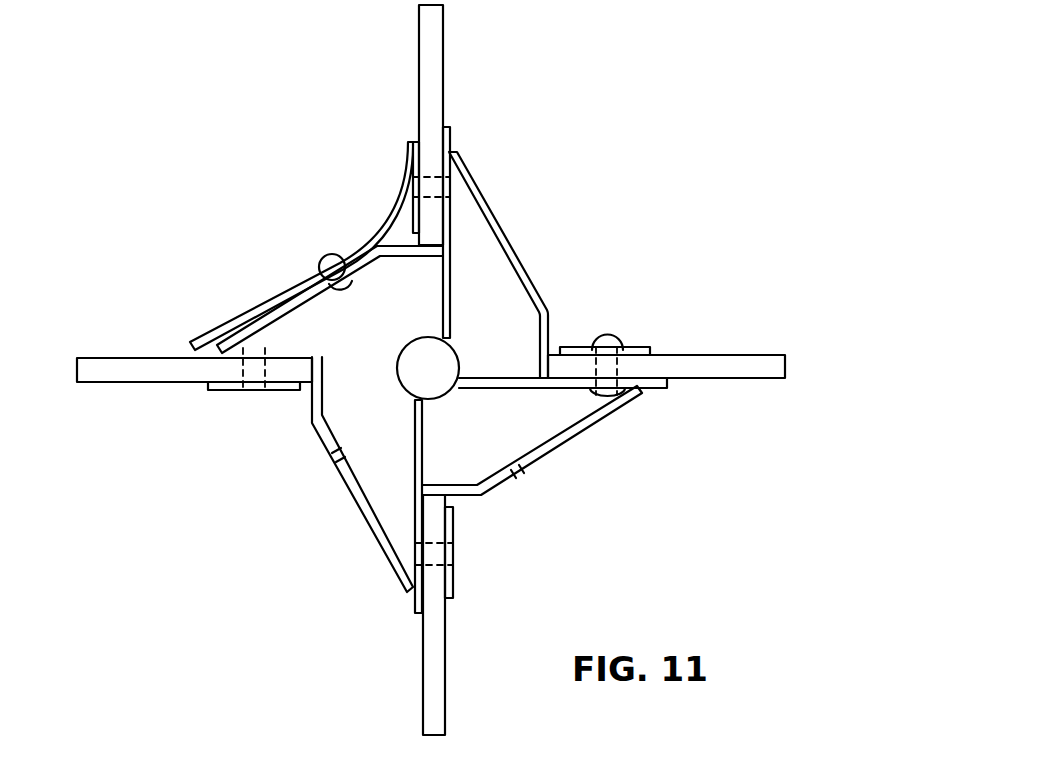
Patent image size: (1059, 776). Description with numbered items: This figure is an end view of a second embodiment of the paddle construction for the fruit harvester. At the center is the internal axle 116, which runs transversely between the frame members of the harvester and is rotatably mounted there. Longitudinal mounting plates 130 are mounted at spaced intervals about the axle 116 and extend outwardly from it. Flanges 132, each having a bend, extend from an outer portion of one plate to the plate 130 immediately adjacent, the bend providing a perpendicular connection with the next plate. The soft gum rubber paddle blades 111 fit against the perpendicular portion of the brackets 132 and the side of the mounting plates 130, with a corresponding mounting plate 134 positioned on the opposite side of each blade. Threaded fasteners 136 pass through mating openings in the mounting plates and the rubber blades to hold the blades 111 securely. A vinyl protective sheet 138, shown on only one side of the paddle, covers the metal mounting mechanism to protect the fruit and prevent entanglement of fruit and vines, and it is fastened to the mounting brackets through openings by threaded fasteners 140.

The paddle blade 111 is at (437, 38).
The internal axle 116 is at (455, 355).
The longitudinal mounting plate 130 is at (447, 270).
The flange 132 is at (362, 265).
The mounting plate 134 is at (648, 347).
The threaded fastener 136 is at (613, 336).
The vinyl protective sheet 138 is at (392, 205).
The threaded fastener 140 is at (325, 262).